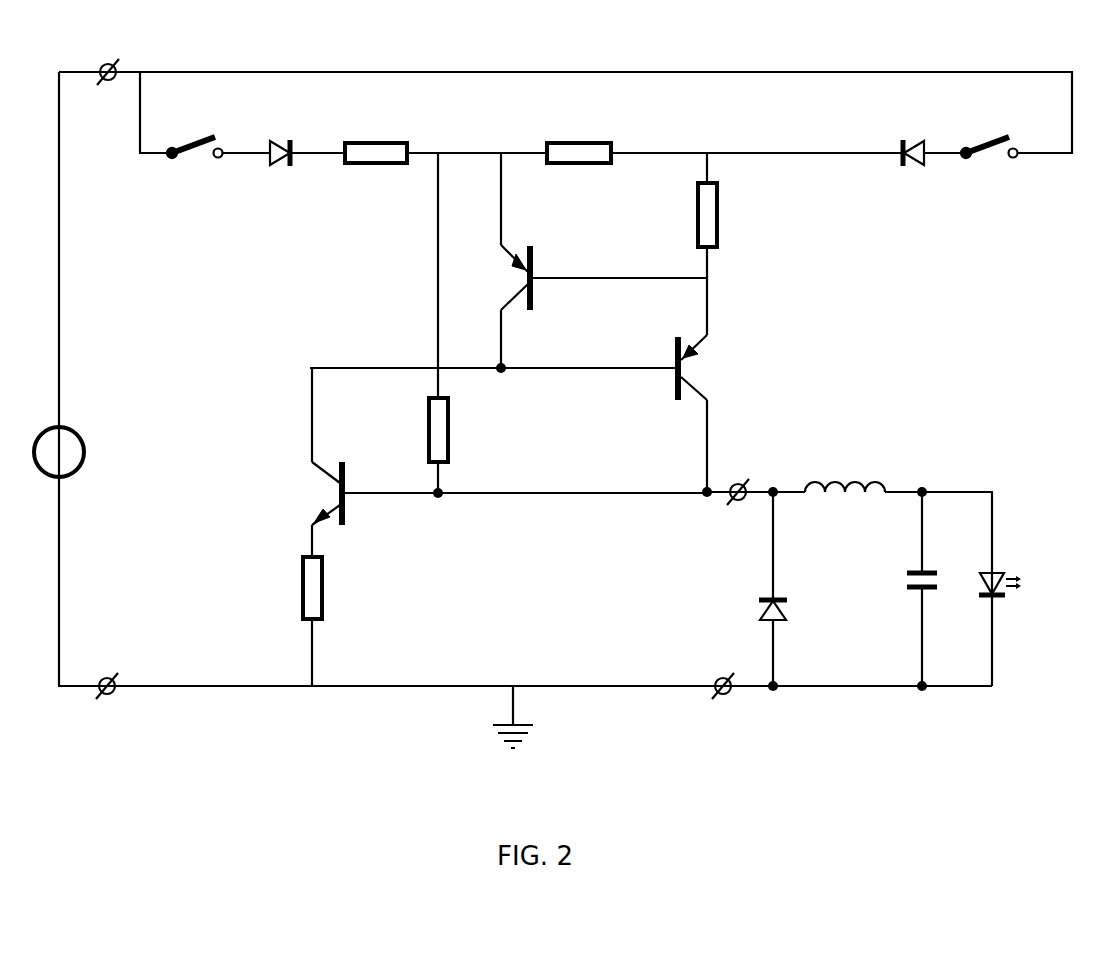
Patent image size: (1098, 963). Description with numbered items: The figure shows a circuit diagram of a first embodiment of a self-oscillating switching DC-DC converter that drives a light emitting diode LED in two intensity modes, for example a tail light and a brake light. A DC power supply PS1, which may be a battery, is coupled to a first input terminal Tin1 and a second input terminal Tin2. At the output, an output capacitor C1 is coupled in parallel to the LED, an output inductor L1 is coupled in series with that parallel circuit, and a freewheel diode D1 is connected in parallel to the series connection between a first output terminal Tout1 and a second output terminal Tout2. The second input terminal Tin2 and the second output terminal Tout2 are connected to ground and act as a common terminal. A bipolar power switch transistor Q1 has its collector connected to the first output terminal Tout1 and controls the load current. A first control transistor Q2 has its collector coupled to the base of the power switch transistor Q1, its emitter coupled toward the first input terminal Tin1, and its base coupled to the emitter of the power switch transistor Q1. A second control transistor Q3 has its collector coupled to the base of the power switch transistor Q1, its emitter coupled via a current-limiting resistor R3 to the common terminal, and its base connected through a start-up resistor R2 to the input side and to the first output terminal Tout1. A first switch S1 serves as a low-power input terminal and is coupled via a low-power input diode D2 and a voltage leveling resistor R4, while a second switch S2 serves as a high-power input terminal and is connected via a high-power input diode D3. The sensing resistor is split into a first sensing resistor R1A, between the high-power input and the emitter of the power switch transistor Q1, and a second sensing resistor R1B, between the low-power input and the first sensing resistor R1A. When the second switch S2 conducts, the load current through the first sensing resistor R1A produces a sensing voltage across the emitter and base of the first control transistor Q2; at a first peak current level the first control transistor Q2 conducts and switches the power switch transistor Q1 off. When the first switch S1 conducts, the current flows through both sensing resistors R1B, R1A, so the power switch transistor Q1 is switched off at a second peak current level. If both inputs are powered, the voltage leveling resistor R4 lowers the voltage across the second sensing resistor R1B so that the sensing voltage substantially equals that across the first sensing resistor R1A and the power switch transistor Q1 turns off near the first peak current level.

The first input terminal Tin1 is at (104, 64).
The second input terminal Tin2 is at (107, 696).
The first output terminal Tout1 is at (746, 484).
The second output terminal Tout2 is at (722, 696).
The DC power supply PS1 is at (85, 450).
The first switch S1 is at (195, 130).
The second switch S2 is at (989, 130).
The freewheel diode D1 is at (795, 611).
The low-power input diode D2 is at (284, 133).
The high-power input diode D3 is at (915, 134).
The first sensing resistor R1A is at (676, 215).
The second sensing resistor R1B is at (579, 133).
The start-up resistor R2 is at (417, 430).
The current-limiting resistor R3 is at (291, 588).
The voltage leveling resistor R4 is at (376, 133).
The power switch transistor Q1 is at (709, 367).
The first control transistor Q2 is at (499, 277).
The second control transistor Q3 is at (311, 493).
The output inductor L1 is at (862, 484).
The output capacitor C1 is at (901, 583).
The light emitting diode LED is at (1018, 600).